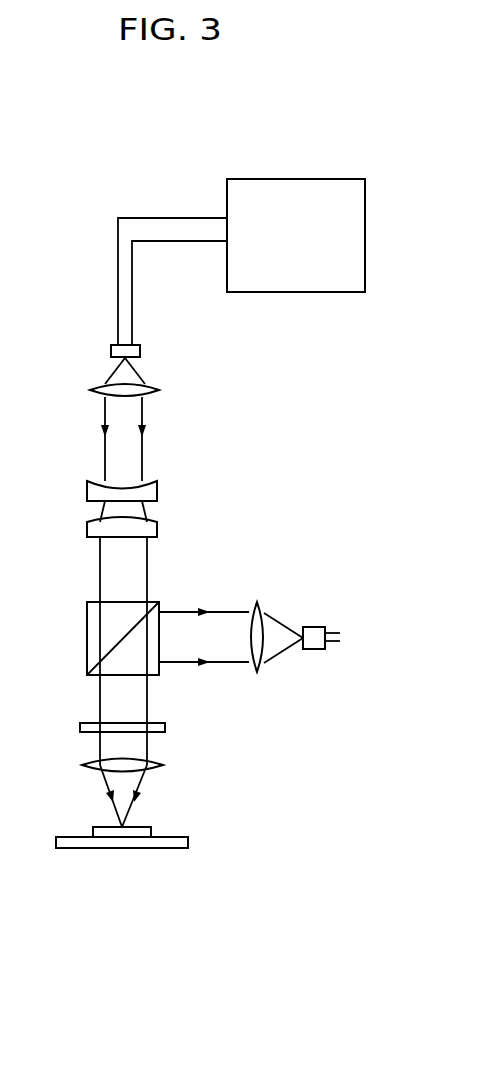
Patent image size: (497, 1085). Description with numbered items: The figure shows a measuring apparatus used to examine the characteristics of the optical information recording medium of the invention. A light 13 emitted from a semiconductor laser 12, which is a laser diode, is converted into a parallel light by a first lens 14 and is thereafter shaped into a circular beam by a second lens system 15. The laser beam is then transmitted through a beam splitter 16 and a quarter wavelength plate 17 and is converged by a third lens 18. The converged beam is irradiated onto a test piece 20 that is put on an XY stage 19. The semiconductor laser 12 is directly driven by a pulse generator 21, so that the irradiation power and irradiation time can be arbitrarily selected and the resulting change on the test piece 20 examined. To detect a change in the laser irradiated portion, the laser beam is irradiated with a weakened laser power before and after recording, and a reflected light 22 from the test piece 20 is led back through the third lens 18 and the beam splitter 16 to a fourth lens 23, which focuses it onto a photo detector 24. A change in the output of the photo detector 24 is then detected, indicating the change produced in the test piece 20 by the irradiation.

The semiconductor laser 12 is at (140, 351).
The light 13 is at (142, 447).
The first lens 14 is at (157, 387).
The second lens system 15 is at (176, 470).
The beam splitter 16 is at (87, 625).
The quarter wavelength plate 17 is at (80, 726).
The third lens 18 is at (163, 762).
The XY stage 19 is at (188, 842).
The test piece 20 is at (138, 828).
The pulse generator 21 is at (365, 247).
The reflected light 22 is at (230, 663).
The fourth lens 23 is at (257, 602).
The photo detector 24 is at (318, 627).